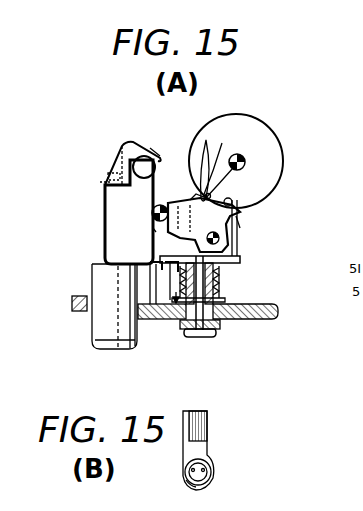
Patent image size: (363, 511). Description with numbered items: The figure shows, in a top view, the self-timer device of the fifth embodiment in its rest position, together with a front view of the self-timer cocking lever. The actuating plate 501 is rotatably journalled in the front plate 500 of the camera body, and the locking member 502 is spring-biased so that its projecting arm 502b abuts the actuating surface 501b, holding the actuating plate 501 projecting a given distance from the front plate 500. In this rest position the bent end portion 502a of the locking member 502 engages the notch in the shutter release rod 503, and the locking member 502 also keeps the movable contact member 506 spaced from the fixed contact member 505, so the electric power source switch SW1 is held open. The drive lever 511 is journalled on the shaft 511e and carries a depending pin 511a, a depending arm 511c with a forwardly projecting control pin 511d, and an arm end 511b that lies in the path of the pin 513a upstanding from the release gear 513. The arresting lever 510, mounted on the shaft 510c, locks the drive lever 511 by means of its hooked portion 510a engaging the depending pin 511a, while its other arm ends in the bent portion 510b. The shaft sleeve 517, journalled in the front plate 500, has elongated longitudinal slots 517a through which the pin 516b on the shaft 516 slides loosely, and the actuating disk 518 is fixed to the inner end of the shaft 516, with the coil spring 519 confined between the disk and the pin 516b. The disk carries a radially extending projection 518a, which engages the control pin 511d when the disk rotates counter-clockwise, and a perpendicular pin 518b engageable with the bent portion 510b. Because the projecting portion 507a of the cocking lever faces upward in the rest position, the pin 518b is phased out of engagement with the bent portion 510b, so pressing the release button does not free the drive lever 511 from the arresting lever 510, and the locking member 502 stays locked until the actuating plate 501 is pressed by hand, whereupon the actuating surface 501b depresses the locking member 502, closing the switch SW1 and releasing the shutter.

The electric power source switch SW1 is at (91, 136).
The front plate 500 is at (280, 319).
The actuating plate 501 is at (95, 321).
The actuating surface 501b is at (100, 276).
The locking member 502 is at (101, 217).
The bent end portion 502a is at (158, 150).
The projecting arm 502b is at (150, 232).
The shutter release rod 503 is at (157, 160).
The fixed contact member 505 is at (122, 145).
The movable contact member 506 is at (104, 180).
The projecting portion 507a is at (204, 421).
The arresting lever 510 is at (212, 219).
The hooked portion 510a is at (224, 139).
The bent portion 510b is at (172, 284).
The shaft 510c is at (238, 222).
The drive lever 511 is at (205, 195).
The depending pin 511a is at (206, 140).
The arm end 511b is at (239, 158).
The depending arm 511c is at (150, 256).
The control pin 511d is at (173, 266).
The shaft 511e is at (151, 212).
The release gear 513 is at (283, 158).
The pin 513a is at (232, 200).
The shaft 516 is at (210, 336).
The pin 516b is at (240, 300).
The shaft sleeve 517 is at (162, 299).
The elongated longitudinal slots 517a is at (214, 291).
The actuating disk 518 is at (243, 258).
The radially extending projection 518a is at (236, 262).
The pin 518b is at (218, 242).
The coil spring 519 is at (215, 278).